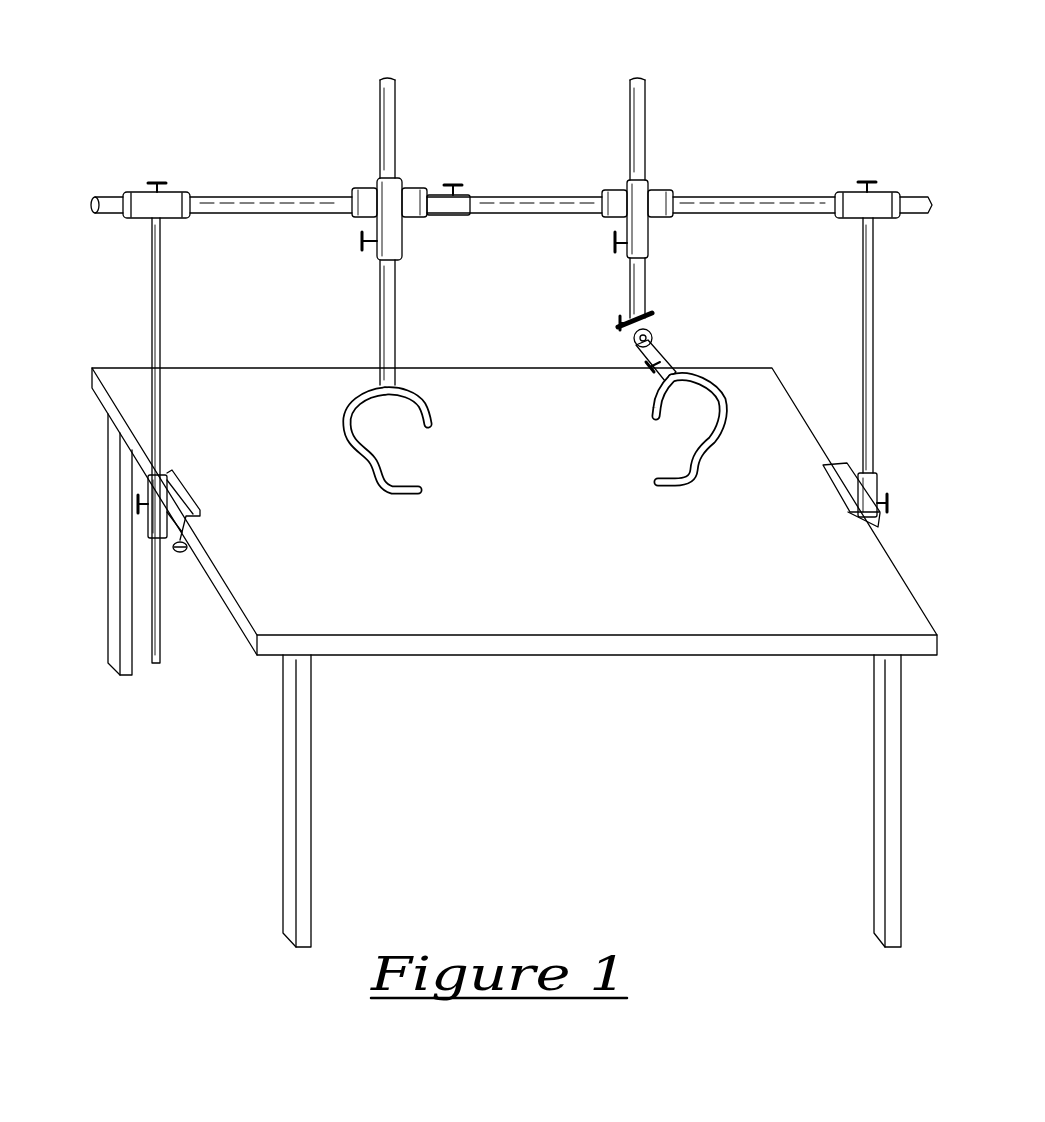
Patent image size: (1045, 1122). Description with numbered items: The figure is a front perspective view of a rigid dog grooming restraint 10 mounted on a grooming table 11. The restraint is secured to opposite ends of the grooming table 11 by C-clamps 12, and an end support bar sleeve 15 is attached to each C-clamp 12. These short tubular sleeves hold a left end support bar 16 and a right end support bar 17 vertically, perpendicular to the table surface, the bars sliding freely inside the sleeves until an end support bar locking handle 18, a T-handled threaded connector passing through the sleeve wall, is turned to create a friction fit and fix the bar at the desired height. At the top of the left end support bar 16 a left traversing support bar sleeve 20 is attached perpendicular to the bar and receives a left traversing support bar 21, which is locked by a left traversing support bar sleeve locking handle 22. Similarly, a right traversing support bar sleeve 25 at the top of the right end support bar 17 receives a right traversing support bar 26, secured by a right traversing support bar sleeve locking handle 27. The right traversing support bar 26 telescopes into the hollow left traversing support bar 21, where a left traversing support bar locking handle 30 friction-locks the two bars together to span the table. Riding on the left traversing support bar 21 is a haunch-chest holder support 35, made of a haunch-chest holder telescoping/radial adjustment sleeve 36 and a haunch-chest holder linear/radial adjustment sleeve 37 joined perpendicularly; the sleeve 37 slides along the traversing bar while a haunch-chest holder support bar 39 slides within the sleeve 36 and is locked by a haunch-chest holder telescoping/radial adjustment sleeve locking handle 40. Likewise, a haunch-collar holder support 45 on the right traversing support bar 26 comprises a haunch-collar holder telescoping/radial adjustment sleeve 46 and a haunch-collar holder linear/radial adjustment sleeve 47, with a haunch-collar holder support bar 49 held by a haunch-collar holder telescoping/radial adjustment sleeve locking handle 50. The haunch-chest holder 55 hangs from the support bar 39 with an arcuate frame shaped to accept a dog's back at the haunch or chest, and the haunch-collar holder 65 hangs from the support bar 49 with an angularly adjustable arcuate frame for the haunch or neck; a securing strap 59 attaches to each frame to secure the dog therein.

The rigid dog grooming restraint 10 is at (244, 72).
The grooming table 11 is at (463, 653).
The C-clamp 12 is at (183, 552).
The end support bar sleeve 15 is at (160, 520).
The left end support bar 16 is at (153, 347).
The right end support bar 17 is at (873, 332).
The end support bar locking handle 18 is at (135, 505).
The left traversing support bar sleeve 20 is at (142, 200).
The left traversing support bar 21 is at (240, 203).
The left traversing support bar sleeve locking handle 22 is at (165, 182).
The right traversing support bar sleeve 25 is at (892, 195).
The right traversing support bar 26 is at (747, 197).
The right traversing support bar sleeve locking handle 27 is at (868, 177).
The left traversing support bar locking handle 30 is at (455, 182).
The haunch-chest holder support 35 is at (386, 202).
The haunch-chest holder telescoping/radial adjustment sleeve 36 is at (402, 240).
The haunch-chest holder linear/radial adjustment sleeve 37 is at (367, 208).
The haunch-chest holder support bar 39 is at (385, 122).
The haunch-chest holder telescoping/radial adjustment sleeve locking handle 40 is at (367, 247).
The haunch-collar holder support 45 is at (636, 196).
The haunch-collar holder telescoping/radial adjustment sleeve 46 is at (650, 227).
The haunch-collar holder linear/radial adjustment sleeve 47 is at (608, 187).
The haunch-collar holder support bar 49 is at (632, 100).
The haunch-collar holder telescoping/radial adjustment sleeve locking handle 50 is at (613, 245).
The haunch-chest holder 55 is at (526, 414).
The securing strap 59 is at (390, 478).
The haunch-collar holder 65 is at (640, 355).